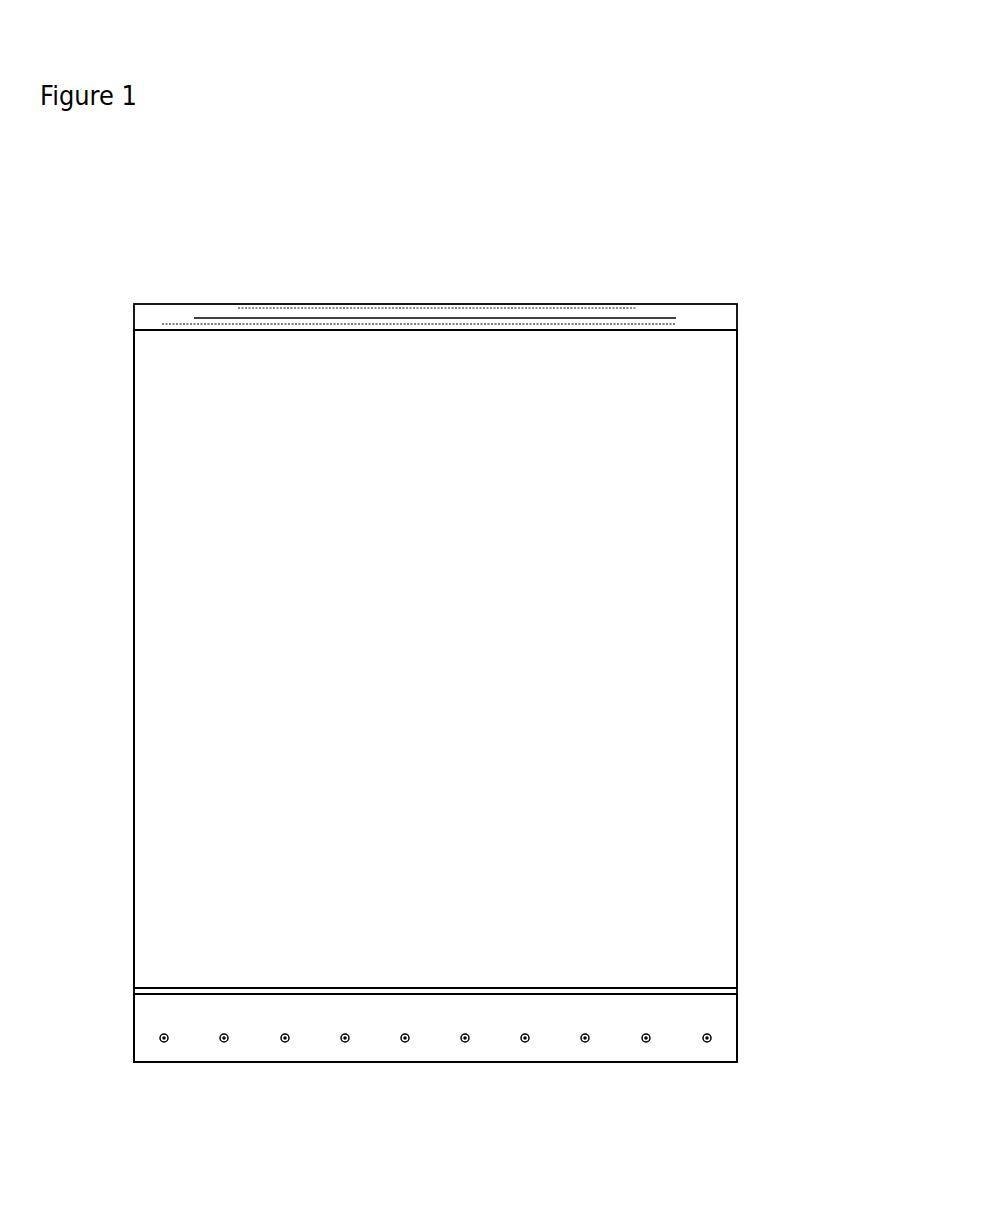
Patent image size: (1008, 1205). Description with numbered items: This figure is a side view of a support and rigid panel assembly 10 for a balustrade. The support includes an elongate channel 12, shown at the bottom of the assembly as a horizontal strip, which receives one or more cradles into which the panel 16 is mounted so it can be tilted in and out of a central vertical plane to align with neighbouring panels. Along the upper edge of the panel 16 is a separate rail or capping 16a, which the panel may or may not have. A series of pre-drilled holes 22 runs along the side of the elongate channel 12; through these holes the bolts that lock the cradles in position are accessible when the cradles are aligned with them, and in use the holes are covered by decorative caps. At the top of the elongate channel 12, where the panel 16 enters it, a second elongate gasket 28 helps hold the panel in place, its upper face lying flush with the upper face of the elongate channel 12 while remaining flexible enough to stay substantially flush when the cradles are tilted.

The support and rigid panel assembly 10 is at (759, 163).
The elongate channel 12 is at (684, 1052).
The panel 16 is at (684, 654).
The rail or capping 16a is at (719, 317).
The pre-drilled holes 22 is at (340, 1058).
The second elongate gasket 28 is at (699, 987).